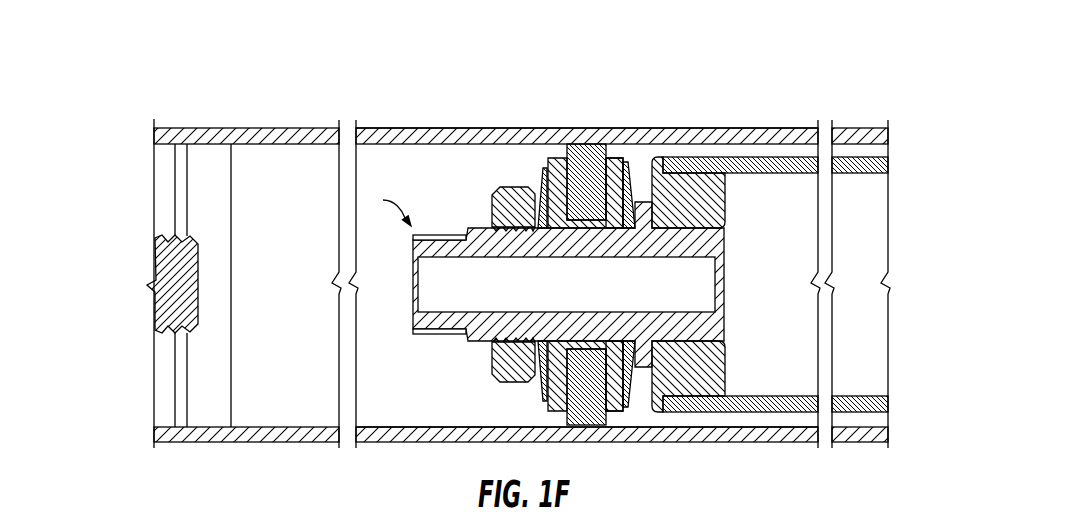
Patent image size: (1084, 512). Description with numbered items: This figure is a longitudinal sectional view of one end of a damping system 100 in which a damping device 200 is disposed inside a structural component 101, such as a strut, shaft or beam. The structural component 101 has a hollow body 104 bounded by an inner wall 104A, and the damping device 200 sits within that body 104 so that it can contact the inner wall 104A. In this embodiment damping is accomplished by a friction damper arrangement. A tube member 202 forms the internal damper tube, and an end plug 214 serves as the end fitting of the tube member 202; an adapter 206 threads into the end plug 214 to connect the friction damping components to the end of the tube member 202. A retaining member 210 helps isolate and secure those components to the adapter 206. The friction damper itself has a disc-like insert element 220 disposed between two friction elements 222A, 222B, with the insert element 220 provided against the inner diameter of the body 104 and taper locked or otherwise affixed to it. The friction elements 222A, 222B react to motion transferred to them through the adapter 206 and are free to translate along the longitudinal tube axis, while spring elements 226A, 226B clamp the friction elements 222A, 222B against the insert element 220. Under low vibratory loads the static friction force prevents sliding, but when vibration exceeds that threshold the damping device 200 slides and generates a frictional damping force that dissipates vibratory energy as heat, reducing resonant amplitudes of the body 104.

The damping system 100 is at (174, 93).
The hollow body 104 is at (296, 128).
The structural component 101 is at (369, 128).
The inner wall 104A is at (503, 423).
The damping device 200 is at (450, 200).
The adapter 206 is at (445, 323).
The retaining member 210 is at (510, 192).
The end plug 214 is at (668, 382).
The insert element 220 is at (588, 155).
The friction element 222A is at (557, 162).
The friction element 222B is at (617, 167).
The spring element 226A is at (545, 395).
The spring element 226B is at (631, 401).
The tube member 202 is at (852, 156).